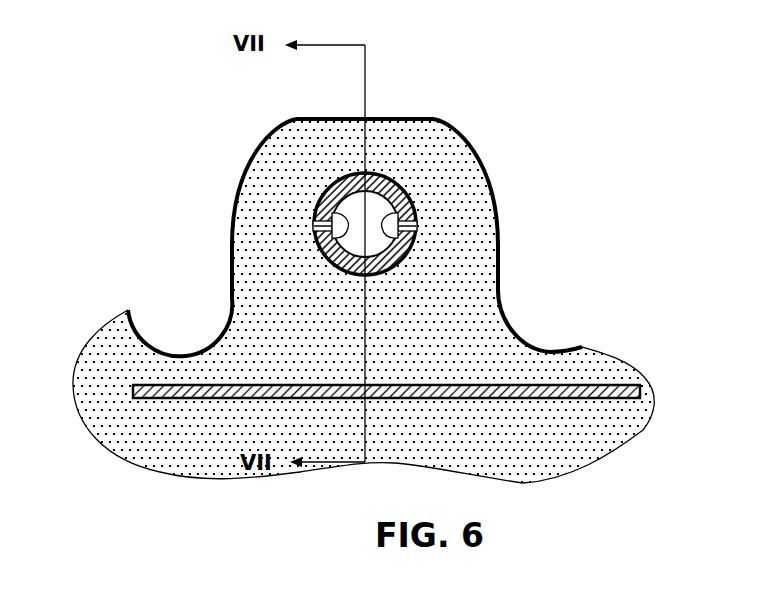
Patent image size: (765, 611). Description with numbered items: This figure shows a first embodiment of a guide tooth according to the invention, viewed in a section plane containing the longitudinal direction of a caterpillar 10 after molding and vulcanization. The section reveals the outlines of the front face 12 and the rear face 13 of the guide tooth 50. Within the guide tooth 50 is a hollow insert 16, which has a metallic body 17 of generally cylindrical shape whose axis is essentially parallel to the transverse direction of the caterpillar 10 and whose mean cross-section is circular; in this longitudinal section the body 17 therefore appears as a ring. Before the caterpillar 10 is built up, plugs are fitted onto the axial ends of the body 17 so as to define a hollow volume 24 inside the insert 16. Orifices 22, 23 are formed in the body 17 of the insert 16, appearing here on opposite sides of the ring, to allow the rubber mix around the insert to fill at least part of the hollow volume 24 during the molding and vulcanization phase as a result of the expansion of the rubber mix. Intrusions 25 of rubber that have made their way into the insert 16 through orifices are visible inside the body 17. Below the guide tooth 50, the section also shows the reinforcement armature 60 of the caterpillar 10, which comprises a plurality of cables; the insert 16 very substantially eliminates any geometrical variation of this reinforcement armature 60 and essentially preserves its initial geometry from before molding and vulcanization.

The caterpillar 10 is at (210, 134).
The front face 12 is at (488, 193).
The rear face 13 is at (232, 243).
The hollow insert 16 is at (440, 205).
The metallic body 17 is at (372, 174).
The orifice 22 is at (313, 229).
The orifice 23 is at (417, 226).
The hollow volume 24 is at (380, 237).
The intrusions of rubber 25 is at (350, 218).
The guide tooth 50 is at (426, 143).
The reinforcement armature 60 is at (423, 393).